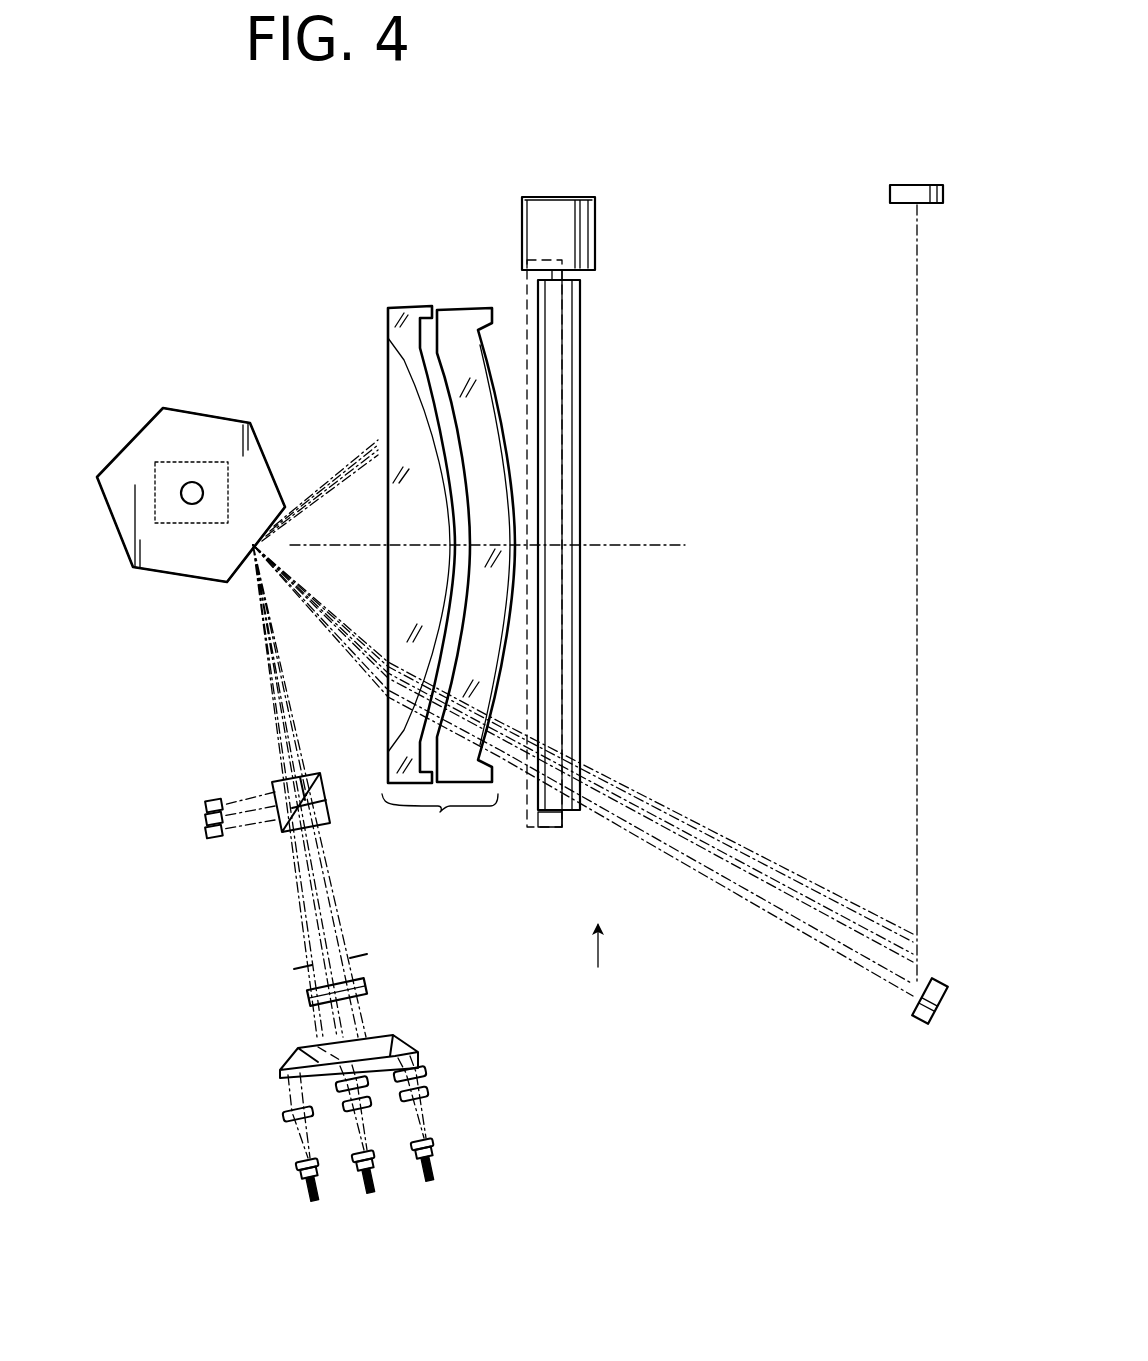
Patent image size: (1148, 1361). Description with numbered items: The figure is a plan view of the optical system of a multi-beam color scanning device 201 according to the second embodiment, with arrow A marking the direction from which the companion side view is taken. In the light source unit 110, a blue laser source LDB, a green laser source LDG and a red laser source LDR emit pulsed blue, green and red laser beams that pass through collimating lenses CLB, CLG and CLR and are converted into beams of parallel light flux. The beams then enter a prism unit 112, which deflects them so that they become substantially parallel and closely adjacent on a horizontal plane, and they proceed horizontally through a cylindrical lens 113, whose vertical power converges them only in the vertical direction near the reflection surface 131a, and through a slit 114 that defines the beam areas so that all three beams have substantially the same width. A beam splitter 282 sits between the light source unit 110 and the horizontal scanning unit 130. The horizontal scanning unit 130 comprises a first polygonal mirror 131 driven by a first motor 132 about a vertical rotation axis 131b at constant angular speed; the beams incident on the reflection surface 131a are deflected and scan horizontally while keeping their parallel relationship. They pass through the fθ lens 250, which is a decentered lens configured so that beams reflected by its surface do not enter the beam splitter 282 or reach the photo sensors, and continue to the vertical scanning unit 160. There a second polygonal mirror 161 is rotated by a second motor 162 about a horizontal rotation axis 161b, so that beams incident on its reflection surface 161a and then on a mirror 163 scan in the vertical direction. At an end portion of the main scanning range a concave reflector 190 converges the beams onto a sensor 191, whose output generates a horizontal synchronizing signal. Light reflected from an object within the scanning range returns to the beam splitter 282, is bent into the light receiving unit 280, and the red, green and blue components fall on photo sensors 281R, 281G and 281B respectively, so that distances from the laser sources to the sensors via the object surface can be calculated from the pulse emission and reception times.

The horizontal scanning unit 130 is at (126, 420).
The first polygonal mirror 131 is at (163, 406).
The first motor 132 is at (215, 462).
The reflection surface 131a is at (240, 577).
The rotation axis 131b is at (204, 493).
The multi-beam color scanning device 201 is at (145, 680).
The light receiving unit 280 is at (225, 788).
The beam splitter 282 is at (314, 775).
The photo sensor 281R is at (206, 803).
The photo sensor 281G is at (206, 818).
The photo sensor 281B is at (206, 832).
The slit 114 is at (303, 968).
The cylindrical lens 113 is at (366, 985).
The prism unit 112 is at (418, 1025).
The light source unit 110 is at (350, 1109).
The collimating lens CLR is at (430, 1094).
The collimating lens CLG is at (340, 1108).
The collimating lens CLB is at (283, 1115).
The red laser source LDR is at (416, 1162).
The green laser source LDG is at (366, 1185).
The blue laser source LDB is at (300, 1170).
The fθ lens 250 is at (448, 578).
The vertical scanning unit 160 is at (668, 300).
The second motor 162 is at (577, 197).
The rotation axis 161b is at (548, 270).
The second polygonal mirror 161 is at (586, 398).
The mirror 163 is at (562, 707).
The reflection surface 161a is at (536, 816).
The concave reflector 190 is at (916, 1010).
The sensor 191 is at (932, 185).
The arrow A is at (599, 964).